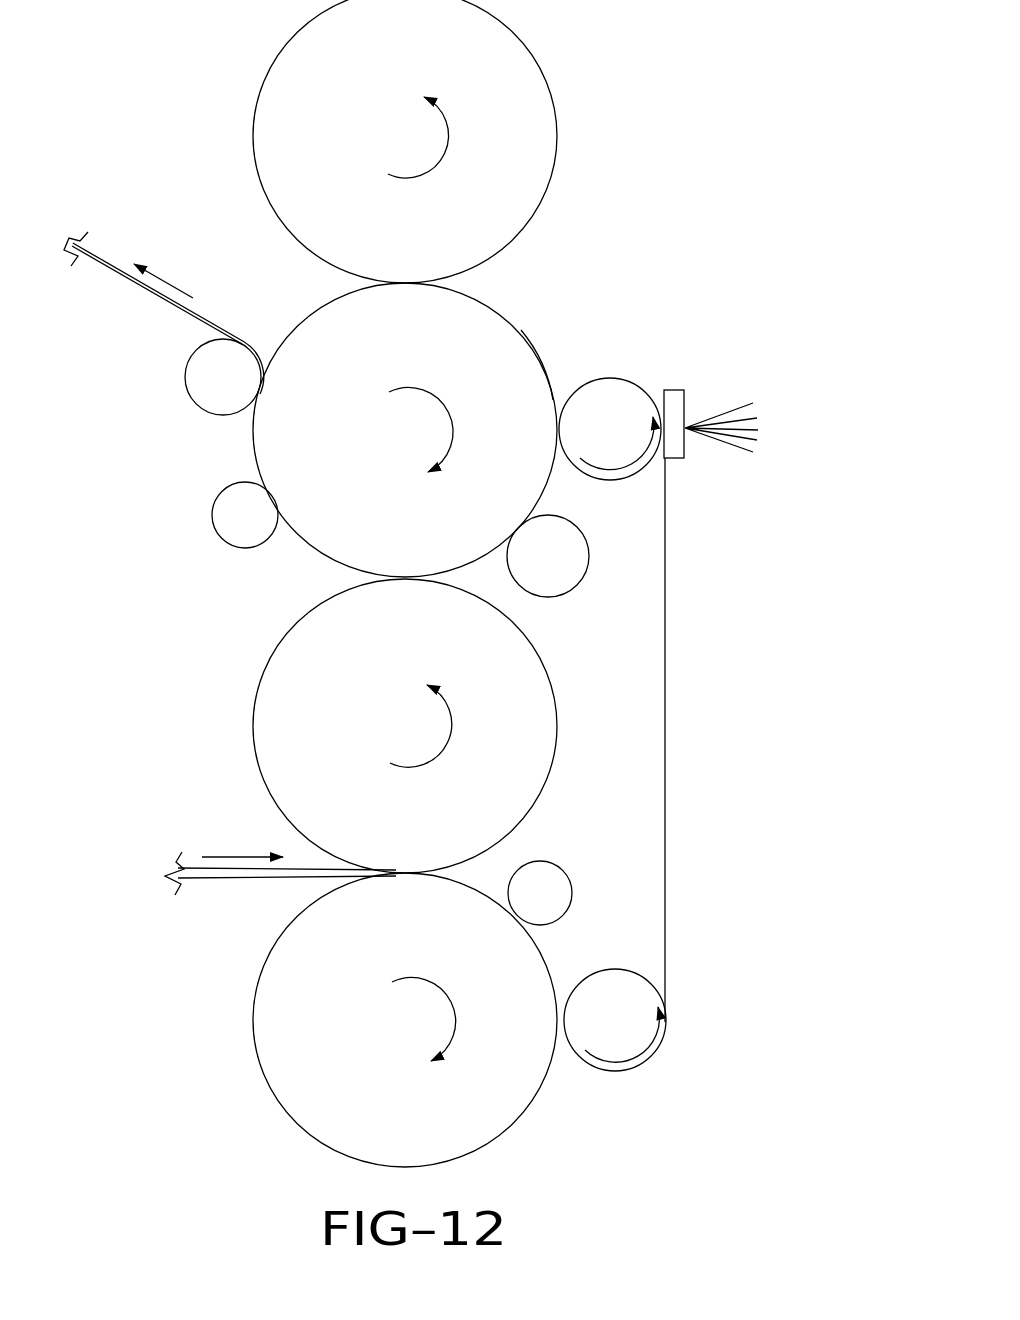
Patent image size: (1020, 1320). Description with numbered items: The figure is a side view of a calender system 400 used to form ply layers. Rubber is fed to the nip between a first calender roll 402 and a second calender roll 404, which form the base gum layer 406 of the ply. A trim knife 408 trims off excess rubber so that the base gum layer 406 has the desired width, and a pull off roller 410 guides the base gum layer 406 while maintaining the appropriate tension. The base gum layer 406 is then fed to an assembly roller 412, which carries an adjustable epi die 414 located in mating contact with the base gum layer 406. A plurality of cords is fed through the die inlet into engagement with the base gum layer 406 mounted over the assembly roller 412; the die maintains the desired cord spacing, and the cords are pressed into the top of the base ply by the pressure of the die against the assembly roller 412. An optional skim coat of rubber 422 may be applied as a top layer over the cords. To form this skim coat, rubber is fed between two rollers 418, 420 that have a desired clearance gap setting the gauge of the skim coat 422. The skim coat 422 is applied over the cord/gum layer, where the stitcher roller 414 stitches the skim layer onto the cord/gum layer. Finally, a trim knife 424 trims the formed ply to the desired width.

The calender system 400 is at (190, 660).
The first calender roll 402 is at (503, 1090).
The second calender roll 404 is at (520, 708).
The base gum layer 406 is at (665, 803).
The trim knife 408 is at (538, 887).
The pull off roller 410 is at (680, 455).
The assembly roller 412 is at (623, 390).
The adjustable epi die 414 is at (550, 573).
The roller 418 is at (468, 343).
The roller 420 is at (502, 218).
The skim coat of rubber 422 is at (540, 357).
The trim knife 424 is at (233, 530).